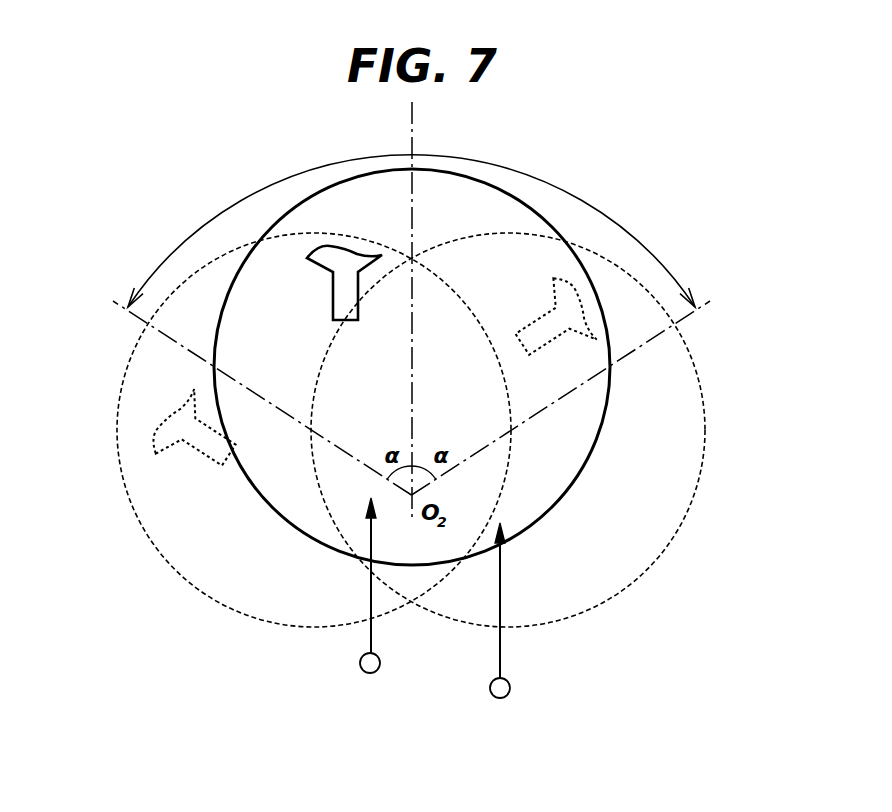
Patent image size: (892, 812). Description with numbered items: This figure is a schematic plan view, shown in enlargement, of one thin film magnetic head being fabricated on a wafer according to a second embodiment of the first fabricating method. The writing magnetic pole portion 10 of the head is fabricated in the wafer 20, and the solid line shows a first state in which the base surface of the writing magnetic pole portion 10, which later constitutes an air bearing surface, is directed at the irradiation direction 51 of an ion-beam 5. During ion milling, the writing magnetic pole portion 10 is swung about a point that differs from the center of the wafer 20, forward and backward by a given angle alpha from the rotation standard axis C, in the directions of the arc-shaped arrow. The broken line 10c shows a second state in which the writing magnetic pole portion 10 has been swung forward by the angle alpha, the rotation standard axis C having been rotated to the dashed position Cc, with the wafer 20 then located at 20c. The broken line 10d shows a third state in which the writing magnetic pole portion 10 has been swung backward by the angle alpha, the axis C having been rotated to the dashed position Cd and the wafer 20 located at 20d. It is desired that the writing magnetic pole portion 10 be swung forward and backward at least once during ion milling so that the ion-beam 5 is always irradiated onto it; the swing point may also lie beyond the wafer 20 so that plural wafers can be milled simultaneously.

The ion-beam 5 is at (380, 663).
The irradiation direction 51 is at (500, 655).
The writing magnetic pole portion 10 is at (333, 291).
The writing magnetic pole portion in second state 10c is at (197, 457).
The writing magnetic pole portion in third state 10d is at (533, 320).
The wafer 20 is at (592, 453).
The wafer position in second state 20c is at (167, 565).
The wafer position in third state 20d is at (667, 552).
The rotation standard axis C is at (413, 131).
The rotated axis position (forward) Cc is at (175, 341).
The rotated axis position (backward) Cd is at (693, 322).